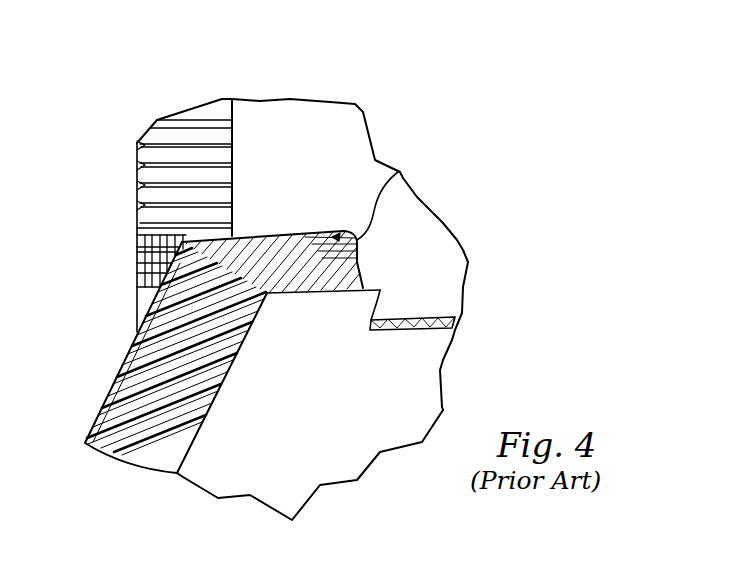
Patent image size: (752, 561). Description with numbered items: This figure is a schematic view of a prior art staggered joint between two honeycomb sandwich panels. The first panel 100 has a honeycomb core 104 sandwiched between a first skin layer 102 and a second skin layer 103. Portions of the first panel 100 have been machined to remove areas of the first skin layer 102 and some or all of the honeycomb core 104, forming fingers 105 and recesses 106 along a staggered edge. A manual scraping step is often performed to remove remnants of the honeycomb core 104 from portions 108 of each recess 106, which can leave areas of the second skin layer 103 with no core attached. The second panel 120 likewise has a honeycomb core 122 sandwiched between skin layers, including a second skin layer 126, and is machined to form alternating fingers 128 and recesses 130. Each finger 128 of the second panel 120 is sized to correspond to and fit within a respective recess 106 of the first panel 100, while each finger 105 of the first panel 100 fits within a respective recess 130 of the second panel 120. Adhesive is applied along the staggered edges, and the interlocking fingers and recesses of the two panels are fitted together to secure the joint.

The first panel 100 is at (320, 132).
The first skin layer 102 is at (324, 183).
The second skin layer 103 is at (136, 215).
The honeycomb core 104 is at (217, 158).
The finger 105 is at (427, 273).
The recess 106 is at (398, 172).
The portion of recess 108 is at (163, 250).
The second panel 120 is at (400, 375).
The honeycomb core 122 is at (160, 352).
The second skin layer 126 is at (311, 415).
The finger 128 is at (320, 274).
The recess 130 is at (407, 320).